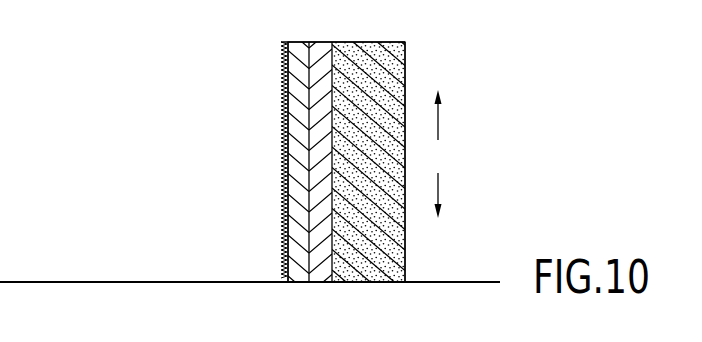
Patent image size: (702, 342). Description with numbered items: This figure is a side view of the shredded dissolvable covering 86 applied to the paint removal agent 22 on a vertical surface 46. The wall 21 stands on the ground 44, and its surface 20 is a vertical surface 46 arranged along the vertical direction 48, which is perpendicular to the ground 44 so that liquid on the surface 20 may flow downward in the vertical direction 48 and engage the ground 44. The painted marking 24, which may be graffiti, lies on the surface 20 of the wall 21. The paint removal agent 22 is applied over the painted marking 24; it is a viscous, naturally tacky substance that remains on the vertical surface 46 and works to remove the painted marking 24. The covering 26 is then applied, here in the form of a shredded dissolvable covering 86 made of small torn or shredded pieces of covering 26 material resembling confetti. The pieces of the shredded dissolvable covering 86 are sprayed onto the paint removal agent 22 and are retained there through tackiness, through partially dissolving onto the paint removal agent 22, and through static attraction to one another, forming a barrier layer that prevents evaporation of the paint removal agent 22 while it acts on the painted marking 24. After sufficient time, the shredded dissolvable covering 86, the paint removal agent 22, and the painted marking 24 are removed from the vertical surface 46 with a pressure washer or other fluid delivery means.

The surface 20 is at (327, 62).
The vertical surface 46 is at (320, 83).
The painted marking 24 is at (321, 111).
The shredded dissolvable covering 86 is at (285, 138).
The paint removal agent 22 is at (297, 178).
The covering 26 is at (281, 222).
The wall 21 is at (389, 62).
The vertical direction 48 is at (438, 154).
The ground 44 is at (100, 280).